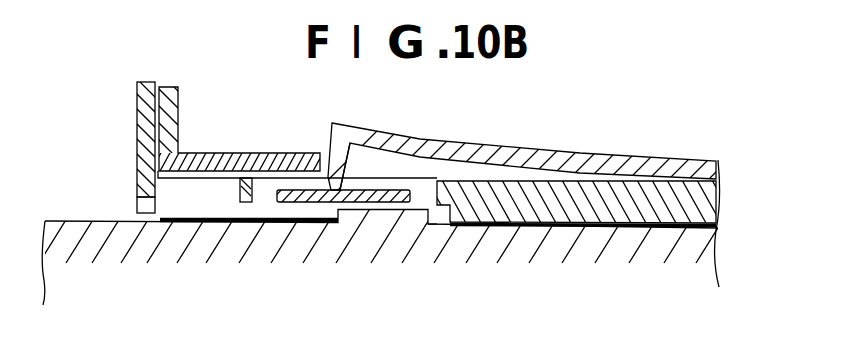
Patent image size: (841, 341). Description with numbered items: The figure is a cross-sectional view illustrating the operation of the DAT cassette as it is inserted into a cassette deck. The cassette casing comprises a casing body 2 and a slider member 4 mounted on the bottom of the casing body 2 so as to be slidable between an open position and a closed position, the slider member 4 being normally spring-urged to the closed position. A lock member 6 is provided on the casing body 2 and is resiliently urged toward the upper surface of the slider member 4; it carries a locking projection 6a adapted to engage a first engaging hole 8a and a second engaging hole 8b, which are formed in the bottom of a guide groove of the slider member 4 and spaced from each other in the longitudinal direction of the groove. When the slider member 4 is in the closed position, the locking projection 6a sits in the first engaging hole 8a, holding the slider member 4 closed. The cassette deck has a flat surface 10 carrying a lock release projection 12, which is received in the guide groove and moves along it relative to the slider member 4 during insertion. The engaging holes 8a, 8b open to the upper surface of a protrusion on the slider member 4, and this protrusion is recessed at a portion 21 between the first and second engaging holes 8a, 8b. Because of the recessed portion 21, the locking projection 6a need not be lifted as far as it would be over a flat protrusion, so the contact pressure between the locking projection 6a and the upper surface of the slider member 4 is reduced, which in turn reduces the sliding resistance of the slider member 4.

The flat surface 10 is at (70, 221).
The casing body 2 is at (243, 151).
The first engaging hole 8a is at (260, 201).
The locking projection 6a is at (313, 203).
The lock member 6 is at (617, 150).
The second engaging hole 8b is at (428, 200).
The recessed portion 21 is at (384, 190).
The slider member 4 is at (549, 226).
The lock release projection 12 is at (424, 212).